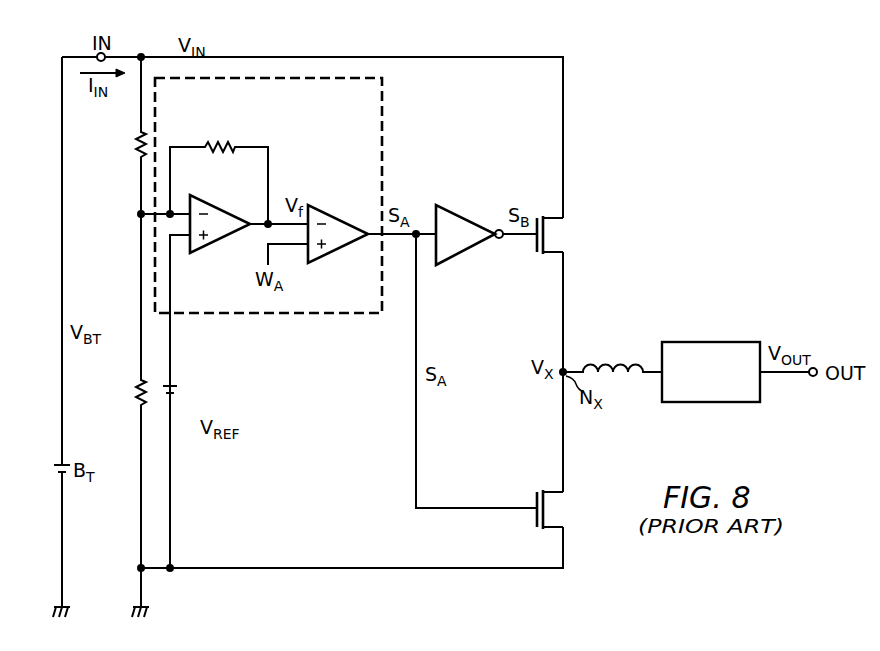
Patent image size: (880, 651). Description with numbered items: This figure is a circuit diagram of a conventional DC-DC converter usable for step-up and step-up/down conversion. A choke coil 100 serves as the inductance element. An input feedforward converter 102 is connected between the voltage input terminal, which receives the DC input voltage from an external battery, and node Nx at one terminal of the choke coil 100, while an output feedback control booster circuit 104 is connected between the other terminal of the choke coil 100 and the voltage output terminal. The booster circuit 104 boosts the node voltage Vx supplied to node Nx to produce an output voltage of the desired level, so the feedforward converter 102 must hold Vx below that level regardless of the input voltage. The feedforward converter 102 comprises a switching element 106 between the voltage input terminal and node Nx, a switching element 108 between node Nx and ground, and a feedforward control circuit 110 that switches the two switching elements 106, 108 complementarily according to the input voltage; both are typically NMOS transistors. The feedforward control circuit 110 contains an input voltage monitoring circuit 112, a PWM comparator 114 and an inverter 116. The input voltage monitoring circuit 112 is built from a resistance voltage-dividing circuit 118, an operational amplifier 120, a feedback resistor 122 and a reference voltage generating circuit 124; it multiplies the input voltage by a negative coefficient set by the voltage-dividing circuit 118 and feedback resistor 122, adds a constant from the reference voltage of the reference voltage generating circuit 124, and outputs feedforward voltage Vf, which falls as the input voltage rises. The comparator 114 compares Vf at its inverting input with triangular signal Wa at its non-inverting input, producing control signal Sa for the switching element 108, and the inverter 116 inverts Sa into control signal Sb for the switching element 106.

The choke coil 100 is at (618, 352).
The input feedforward converter 102 is at (699, 158).
The output feedback control booster circuit 104 is at (711, 341).
The switching element 106 is at (534, 247).
The switching element 108 is at (534, 517).
The feedforward control circuit 110 is at (300, 312).
The input voltage monitoring circuit 112 is at (427, 116).
The PWM comparator 114 is at (334, 214).
The inverter 116 is at (485, 199).
The resistance voltage-dividing circuit 118 is at (140, 183).
The operational amplifier 120 is at (221, 206).
The feedback resistor 122 is at (209, 144).
The reference voltage generating circuit 124 is at (180, 390).